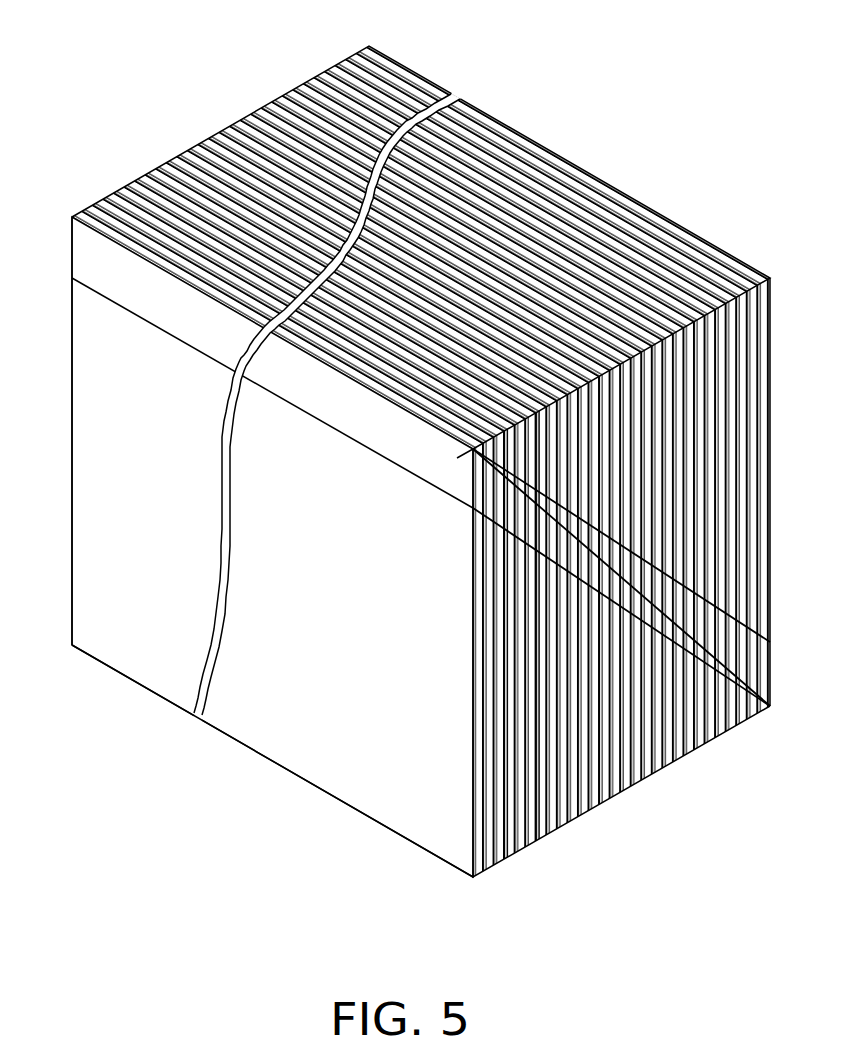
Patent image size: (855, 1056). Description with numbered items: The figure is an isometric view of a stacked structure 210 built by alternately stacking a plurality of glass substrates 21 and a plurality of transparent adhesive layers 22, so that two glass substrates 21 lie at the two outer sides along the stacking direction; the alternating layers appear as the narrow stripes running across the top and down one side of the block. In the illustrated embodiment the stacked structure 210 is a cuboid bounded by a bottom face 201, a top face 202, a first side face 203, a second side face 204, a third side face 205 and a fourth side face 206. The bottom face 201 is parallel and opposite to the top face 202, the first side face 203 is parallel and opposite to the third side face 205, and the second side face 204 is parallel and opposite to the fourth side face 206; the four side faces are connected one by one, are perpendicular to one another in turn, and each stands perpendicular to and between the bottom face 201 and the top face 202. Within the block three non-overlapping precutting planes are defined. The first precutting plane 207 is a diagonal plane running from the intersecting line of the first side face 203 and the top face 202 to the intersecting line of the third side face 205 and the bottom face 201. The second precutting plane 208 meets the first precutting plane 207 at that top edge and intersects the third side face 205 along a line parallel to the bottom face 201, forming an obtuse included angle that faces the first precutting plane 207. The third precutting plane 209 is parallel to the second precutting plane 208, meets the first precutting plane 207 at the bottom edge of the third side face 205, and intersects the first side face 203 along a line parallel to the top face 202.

The stacked structure 210 is at (165, 45).
The top face 202 is at (522, 226).
The second side face 204 is at (585, 748).
The glass substrate 21 is at (508, 854).
The transparent adhesive layer 22 is at (537, 841).
The third side face 205 is at (777, 381).
The first side face 203 is at (350, 788).
The fourth side face 206 is at (70, 444).
The bottom face 201 is at (277, 767).
The second precutting plane 208 is at (687, 586).
The first precutting plane 207 is at (737, 676).
The third precutting plane 209 is at (702, 667).